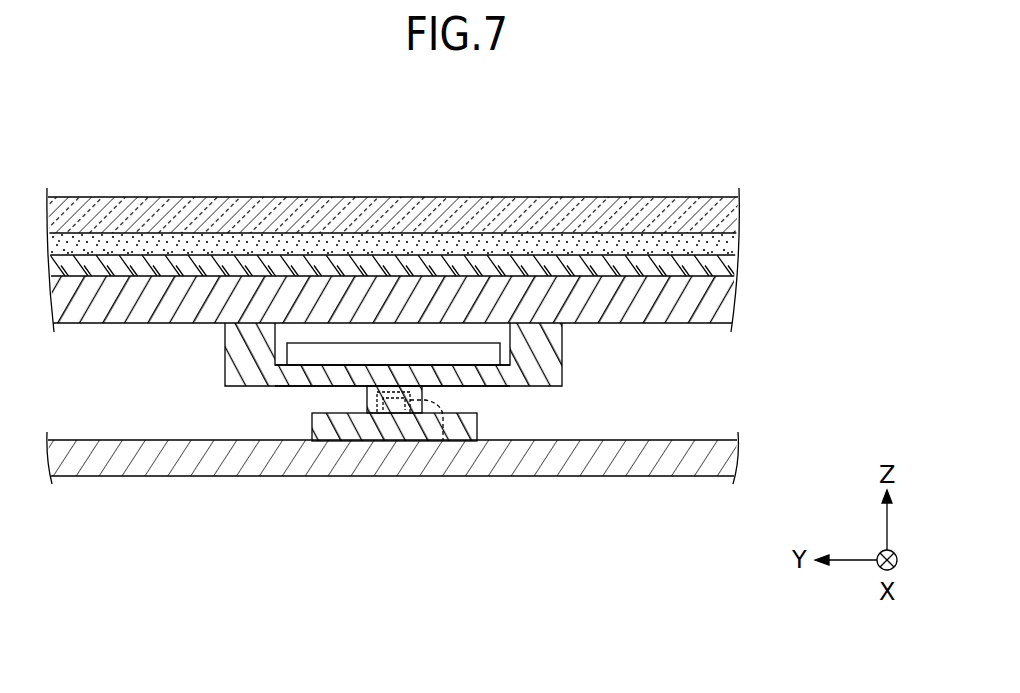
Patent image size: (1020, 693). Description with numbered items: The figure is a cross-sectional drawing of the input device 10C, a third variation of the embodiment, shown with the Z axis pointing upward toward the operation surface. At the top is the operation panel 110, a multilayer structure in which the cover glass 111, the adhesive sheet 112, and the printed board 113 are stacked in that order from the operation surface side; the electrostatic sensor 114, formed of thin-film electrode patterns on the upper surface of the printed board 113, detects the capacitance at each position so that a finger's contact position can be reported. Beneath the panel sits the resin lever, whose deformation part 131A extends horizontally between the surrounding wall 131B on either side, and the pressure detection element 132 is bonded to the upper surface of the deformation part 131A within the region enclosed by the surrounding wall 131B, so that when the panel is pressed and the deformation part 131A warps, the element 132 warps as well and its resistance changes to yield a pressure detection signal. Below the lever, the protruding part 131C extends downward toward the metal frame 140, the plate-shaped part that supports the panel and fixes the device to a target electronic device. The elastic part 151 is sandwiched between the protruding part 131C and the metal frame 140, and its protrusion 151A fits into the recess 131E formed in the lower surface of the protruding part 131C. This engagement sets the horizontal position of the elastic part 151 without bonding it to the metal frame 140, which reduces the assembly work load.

The input device 10C is at (708, 150).
The operation panel 110 is at (471, 260).
The cover glass 111 is at (727, 214).
The adhesive sheet 112 is at (727, 244).
The electrostatic sensor 114 is at (727, 269).
The printed board 113 is at (438, 299).
The deformation part 131A is at (308, 375).
The surrounding wall 131B is at (243, 357).
The protruding part 131C is at (370, 399).
The recess 131E is at (443, 440).
The pressure detection element 132 is at (483, 358).
The metal frame 140 is at (725, 458).
The elastic part 151 is at (477, 427).
The protrusion 151A is at (395, 412).